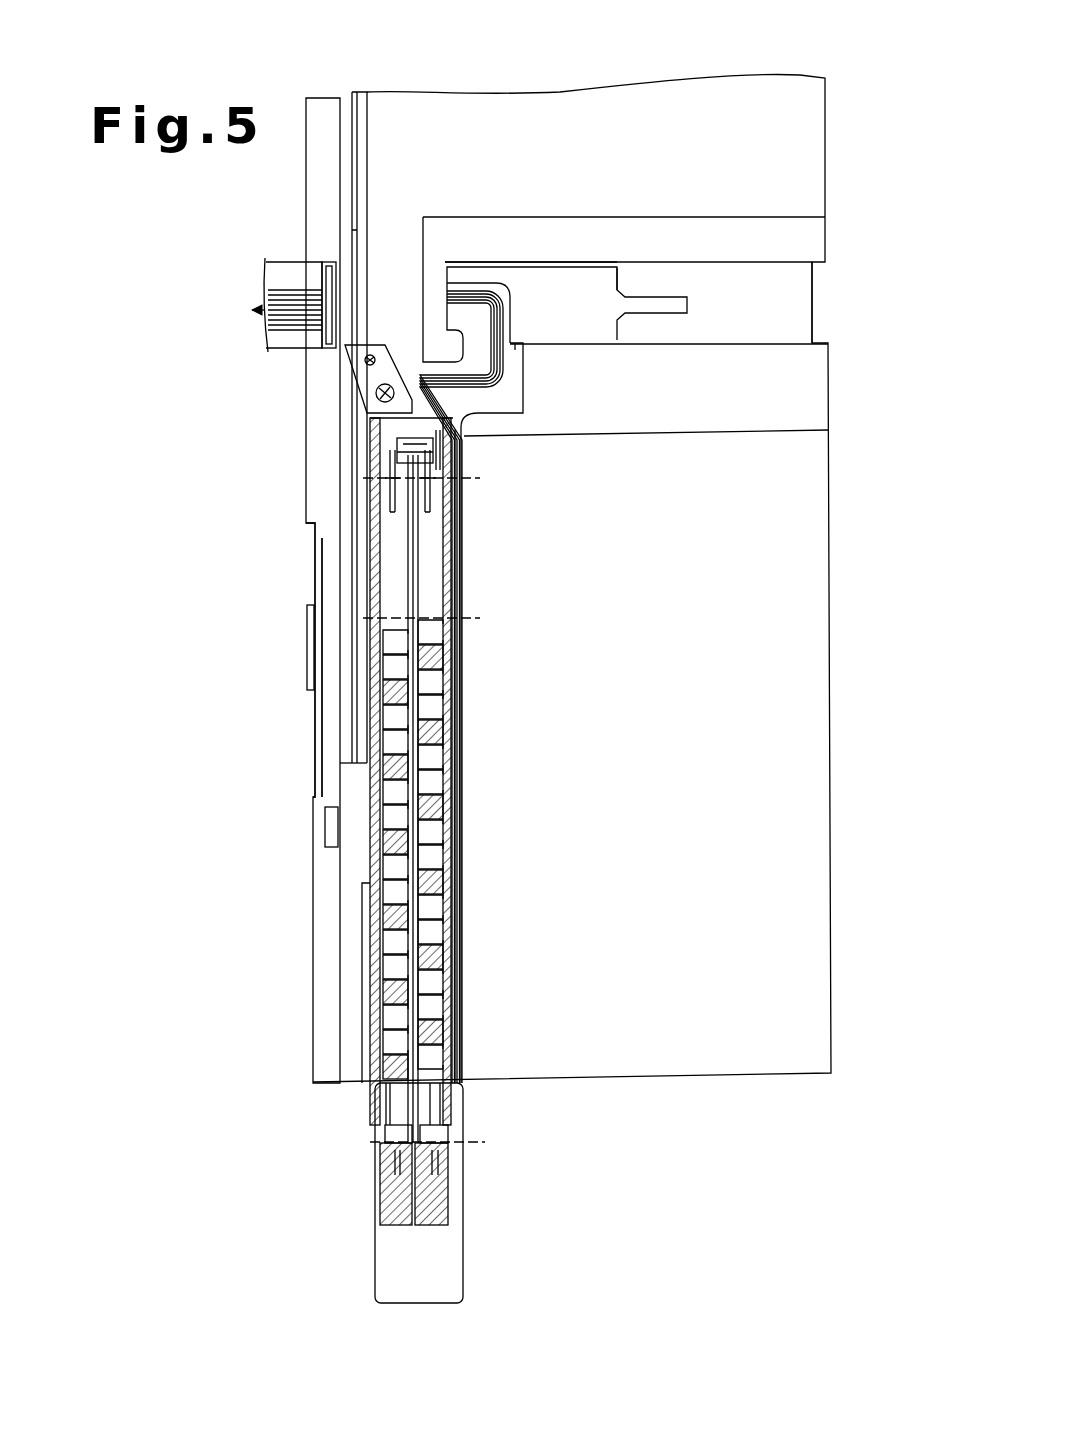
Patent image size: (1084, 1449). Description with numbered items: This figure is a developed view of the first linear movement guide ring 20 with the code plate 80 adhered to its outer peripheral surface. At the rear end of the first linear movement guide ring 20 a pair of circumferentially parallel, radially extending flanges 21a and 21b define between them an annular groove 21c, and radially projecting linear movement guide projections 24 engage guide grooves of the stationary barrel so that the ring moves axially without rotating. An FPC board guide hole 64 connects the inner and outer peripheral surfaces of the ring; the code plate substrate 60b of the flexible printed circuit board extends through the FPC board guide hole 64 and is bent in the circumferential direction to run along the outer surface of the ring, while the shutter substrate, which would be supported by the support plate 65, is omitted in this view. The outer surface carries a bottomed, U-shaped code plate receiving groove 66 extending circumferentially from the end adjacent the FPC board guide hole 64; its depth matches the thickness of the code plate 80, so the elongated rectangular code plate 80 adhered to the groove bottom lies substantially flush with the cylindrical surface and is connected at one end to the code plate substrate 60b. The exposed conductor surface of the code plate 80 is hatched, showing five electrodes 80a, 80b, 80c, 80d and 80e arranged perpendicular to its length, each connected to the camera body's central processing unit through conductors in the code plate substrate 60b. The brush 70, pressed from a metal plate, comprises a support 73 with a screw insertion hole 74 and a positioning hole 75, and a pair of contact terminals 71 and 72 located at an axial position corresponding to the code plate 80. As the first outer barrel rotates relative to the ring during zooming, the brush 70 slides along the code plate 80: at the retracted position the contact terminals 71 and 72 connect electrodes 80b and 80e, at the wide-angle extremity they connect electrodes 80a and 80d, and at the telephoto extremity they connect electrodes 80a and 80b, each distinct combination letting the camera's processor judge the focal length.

The first linear movement guide ring 20 is at (556, 116).
The flange 21a is at (358, 100).
The flange 21b is at (322, 118).
The annular groove 21c is at (340, 505).
The linear movement guide projection 24 is at (325, 352).
The code plate substrate 60b is at (498, 283).
The FPC board guide hole 64 is at (578, 272).
The support plate 65 is at (783, 298).
The code plate receiving groove 66 is at (528, 408).
The brush 70 is at (375, 467).
The contact terminal 71 is at (440, 547).
The contact terminal 72 is at (460, 497).
The support 73 is at (372, 438).
The screw insertion hole 74 is at (385, 340).
The positioning hole 75 is at (355, 372).
The code plate 80 is at (456, 1256).
The electrode 80a is at (382, 672).
The electrode 80b is at (382, 702).
The electrode 80c is at (445, 705).
The electrode 80d is at (448, 682).
The electrode 80e is at (460, 455).